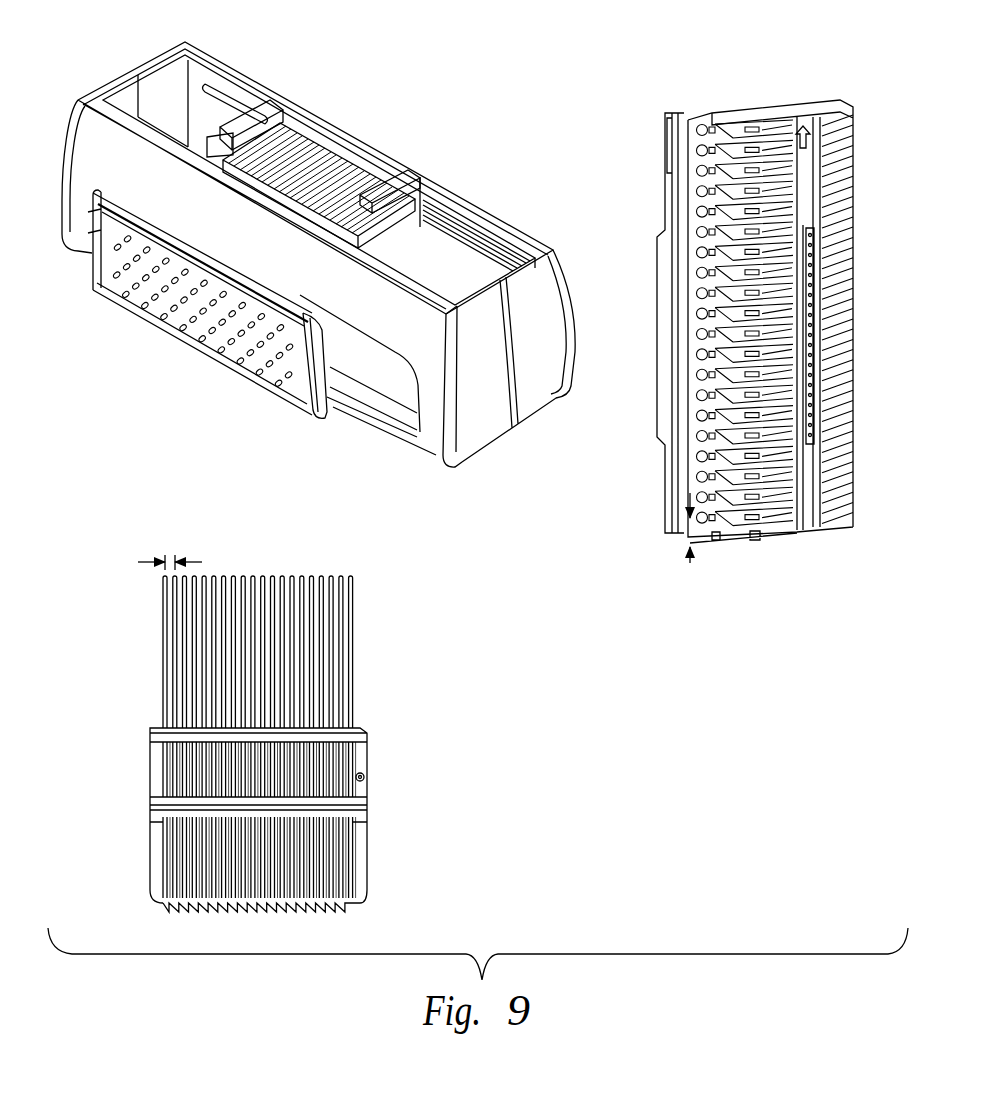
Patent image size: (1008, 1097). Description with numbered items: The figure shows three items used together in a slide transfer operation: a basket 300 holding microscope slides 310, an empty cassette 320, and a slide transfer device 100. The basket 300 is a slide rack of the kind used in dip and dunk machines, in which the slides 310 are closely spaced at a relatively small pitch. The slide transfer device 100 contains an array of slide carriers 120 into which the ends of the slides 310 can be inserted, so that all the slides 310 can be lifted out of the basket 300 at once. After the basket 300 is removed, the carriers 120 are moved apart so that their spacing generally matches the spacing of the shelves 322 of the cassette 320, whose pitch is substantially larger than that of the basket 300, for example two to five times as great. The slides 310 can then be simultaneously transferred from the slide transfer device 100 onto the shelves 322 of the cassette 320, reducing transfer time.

The slide transfer device 100 is at (382, 134).
The slide carriers 120 is at (314, 120).
The basket 300 is at (390, 764).
The microscope slides 310 is at (377, 609).
The cassette 320 is at (743, 92).
The shelves 322 is at (730, 603).